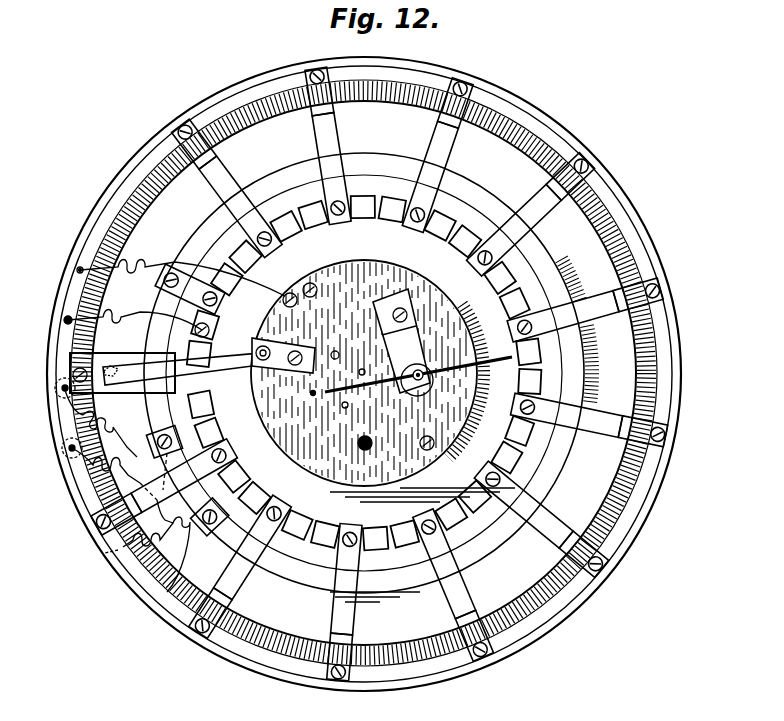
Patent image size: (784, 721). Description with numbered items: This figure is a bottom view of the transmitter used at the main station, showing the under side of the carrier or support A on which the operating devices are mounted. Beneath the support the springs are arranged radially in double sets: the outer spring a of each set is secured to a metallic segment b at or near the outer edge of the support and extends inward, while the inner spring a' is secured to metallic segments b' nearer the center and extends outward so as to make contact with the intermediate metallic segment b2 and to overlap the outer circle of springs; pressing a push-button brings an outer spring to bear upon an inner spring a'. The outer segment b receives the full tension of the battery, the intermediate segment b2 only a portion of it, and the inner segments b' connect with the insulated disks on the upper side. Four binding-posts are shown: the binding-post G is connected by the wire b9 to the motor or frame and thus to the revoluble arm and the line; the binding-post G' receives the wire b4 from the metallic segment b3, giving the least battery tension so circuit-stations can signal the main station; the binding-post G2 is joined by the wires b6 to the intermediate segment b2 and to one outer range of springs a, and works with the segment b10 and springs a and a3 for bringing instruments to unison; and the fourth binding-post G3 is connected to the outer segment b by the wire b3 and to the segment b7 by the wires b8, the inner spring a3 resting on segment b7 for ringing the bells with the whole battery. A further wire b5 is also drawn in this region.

The carrier or support A is at (615, 198).
The outer spring a is at (379, 374).
The inner spring a' is at (411, 374).
The inner spring a3 is at (184, 476).
The outer metallic segment b is at (364, 373).
The inner metallic segment b' is at (364, 373).
The intermediate metallic segment b2 is at (368, 377).
The metallic segment / wire b3 is at (165, 373).
The wire b4 is at (192, 400).
The connecting wire b5 is at (160, 546).
The wires b6 is at (119, 455).
The segment b7 is at (164, 431).
The wires b8 is at (201, 338).
The wire b9 is at (182, 267).
The segment b10 is at (104, 554).
The binding-post G is at (63, 267).
The binding-post G' is at (119, 320).
The binding-post G2 is at (62, 388).
The binding-post G3 is at (68, 448).